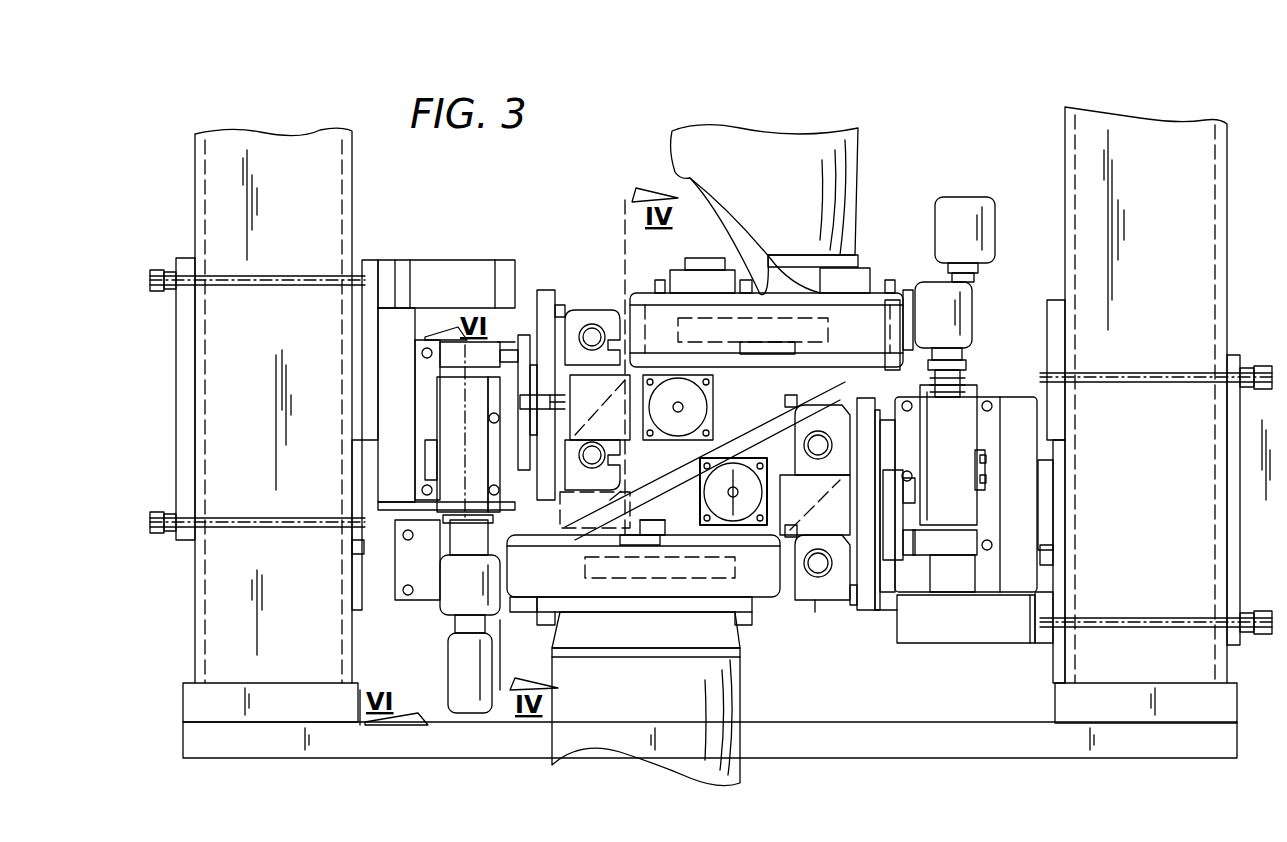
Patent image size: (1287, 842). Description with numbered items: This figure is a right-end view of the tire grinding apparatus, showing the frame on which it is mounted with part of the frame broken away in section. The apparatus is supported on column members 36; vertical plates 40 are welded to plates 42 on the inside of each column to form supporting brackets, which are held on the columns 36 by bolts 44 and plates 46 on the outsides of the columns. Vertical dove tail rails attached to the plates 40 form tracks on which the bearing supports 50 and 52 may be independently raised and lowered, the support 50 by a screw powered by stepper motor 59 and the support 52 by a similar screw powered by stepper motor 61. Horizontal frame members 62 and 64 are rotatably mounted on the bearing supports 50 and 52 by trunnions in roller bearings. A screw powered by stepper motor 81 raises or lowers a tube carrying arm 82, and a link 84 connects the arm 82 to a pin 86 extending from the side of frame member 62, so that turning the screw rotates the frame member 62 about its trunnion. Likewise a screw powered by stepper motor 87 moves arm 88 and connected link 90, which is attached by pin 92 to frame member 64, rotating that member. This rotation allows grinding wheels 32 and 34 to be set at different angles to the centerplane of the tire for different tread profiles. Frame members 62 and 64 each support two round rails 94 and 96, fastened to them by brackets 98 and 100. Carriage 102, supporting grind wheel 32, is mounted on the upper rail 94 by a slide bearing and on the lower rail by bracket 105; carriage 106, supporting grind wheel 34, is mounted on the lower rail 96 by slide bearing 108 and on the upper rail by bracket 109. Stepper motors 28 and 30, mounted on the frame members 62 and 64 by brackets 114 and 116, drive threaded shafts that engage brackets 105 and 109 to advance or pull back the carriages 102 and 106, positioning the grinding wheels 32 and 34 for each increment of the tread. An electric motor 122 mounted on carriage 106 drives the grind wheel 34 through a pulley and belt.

The stepper motor 28 is at (668, 380).
The stepper motor 30 is at (770, 605).
The grinding wheel 32 is at (855, 410).
The grinding wheel 34 is at (578, 502).
The column member 36 is at (355, 190).
The vertical plate 40 is at (392, 592).
The plate 42 is at (365, 265).
The bolt 44 is at (268, 290).
The plate 46 is at (176, 375).
The bearing support 50 is at (400, 320).
The bearing support 52 is at (1000, 630).
The stepper motor 59 is at (440, 680).
The stepper motor 61 is at (995, 210).
The horizontal frame member 62 is at (548, 300).
The horizontal frame member 64 is at (872, 625).
The stepper motor 81 is at (495, 585).
The arm 82 is at (440, 375).
The link 84 is at (522, 340).
The pin 86 is at (520, 422).
The stepper motor 87 is at (915, 305).
The arm 88 is at (975, 540).
The link 90 is at (900, 522).
The pin 92 is at (905, 490).
The round rail 94 is at (592, 330).
The round rail 96 is at (815, 610).
The bracket 98 is at (608, 330).
The bracket 100 is at (808, 440).
The carriage 102 is at (895, 290).
The bracket 105 is at (705, 456).
The carriage 106 is at (525, 610).
The slide bearing 108 is at (853, 600).
The bracket 109 is at (611, 506).
The bracket 114 is at (715, 412).
The bracket 116 is at (703, 492).
The electric motor 122 is at (675, 180).